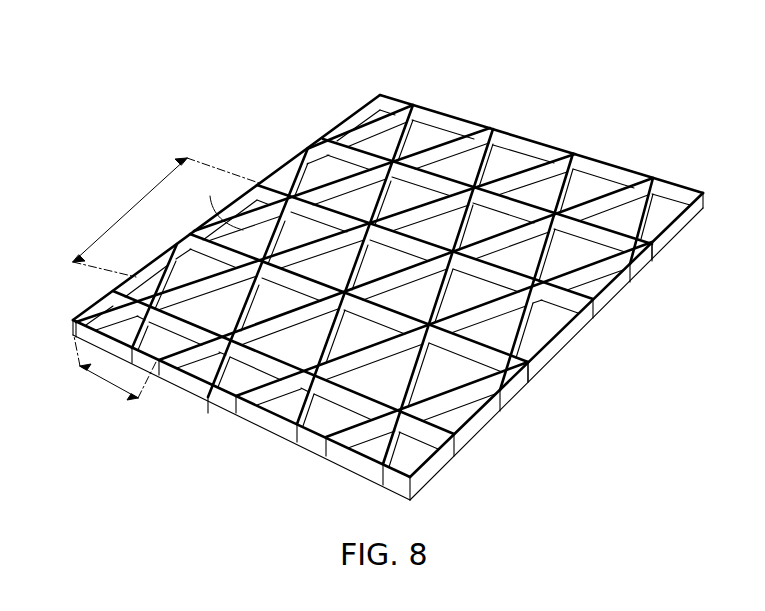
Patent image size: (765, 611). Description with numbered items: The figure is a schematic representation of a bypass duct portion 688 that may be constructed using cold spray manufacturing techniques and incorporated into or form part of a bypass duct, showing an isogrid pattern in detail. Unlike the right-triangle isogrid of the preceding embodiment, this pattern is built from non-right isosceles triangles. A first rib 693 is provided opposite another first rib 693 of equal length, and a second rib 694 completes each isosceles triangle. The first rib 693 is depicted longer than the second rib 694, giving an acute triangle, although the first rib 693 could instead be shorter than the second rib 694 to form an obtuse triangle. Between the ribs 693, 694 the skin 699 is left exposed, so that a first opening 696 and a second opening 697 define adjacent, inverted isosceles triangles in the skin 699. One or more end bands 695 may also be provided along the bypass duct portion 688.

The bypass duct portion 688 is at (388, 265).
The first rib 693 is at (327, 134).
The second rib 694 is at (518, 212).
The end band 695 is at (296, 163).
The first opening 696 is at (498, 162).
The second opening 697 is at (467, 160).
The skin 699 is at (321, 422).